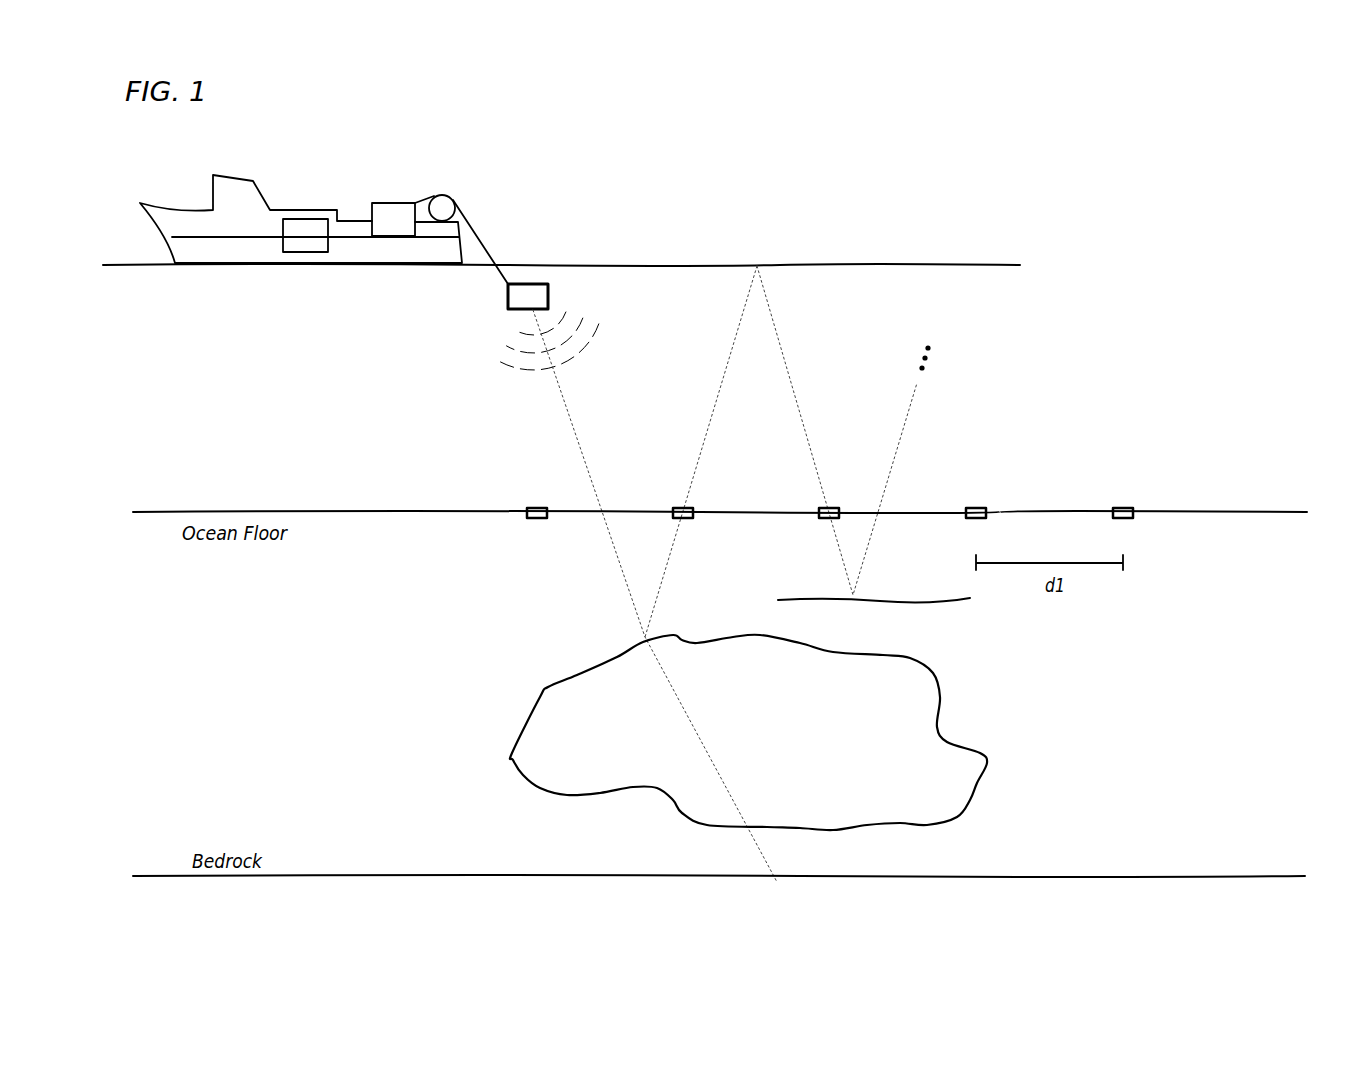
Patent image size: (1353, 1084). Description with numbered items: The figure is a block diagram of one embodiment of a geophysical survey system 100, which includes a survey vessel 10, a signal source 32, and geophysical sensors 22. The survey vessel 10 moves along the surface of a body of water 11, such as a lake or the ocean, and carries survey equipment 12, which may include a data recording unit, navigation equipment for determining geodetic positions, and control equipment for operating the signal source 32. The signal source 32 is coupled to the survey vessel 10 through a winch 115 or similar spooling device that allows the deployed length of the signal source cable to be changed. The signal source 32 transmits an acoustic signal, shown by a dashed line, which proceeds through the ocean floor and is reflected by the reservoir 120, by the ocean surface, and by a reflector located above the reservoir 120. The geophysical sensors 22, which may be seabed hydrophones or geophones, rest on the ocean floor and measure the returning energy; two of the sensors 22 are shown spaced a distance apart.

The survey vessel 10 is at (213, 173).
The body of water 11 is at (561, 252).
The survey equipment 12 is at (310, 252).
The winch 115 is at (387, 202).
The signal source 32 is at (508, 293).
The geophysical sensors 22 is at (1123, 507).
The geophysical survey system 100 is at (1150, 193).
The reservoir 120 is at (676, 766).